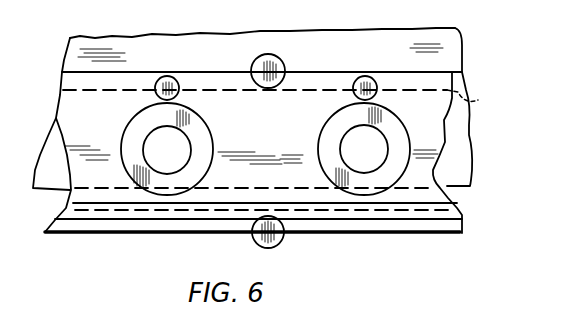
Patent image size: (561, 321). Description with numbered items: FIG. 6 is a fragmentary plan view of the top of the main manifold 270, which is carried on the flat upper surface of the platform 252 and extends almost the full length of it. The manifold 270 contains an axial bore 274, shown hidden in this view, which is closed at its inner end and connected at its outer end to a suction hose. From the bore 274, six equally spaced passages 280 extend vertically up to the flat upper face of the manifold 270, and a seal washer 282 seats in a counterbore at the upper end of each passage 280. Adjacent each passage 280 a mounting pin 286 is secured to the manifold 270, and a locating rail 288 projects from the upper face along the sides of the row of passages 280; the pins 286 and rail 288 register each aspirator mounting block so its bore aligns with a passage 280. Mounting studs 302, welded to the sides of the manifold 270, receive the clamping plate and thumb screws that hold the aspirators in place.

The platform 252 is at (448, 45).
The main manifold 270 is at (470, 134).
The axial bore 274 is at (474, 99).
The passage 280 is at (148, 155).
The seal washer 282 is at (326, 133).
The mounting pin 286 is at (197, 50).
The locating rail 288 is at (457, 212).
The mounting stud 302 is at (273, 55).